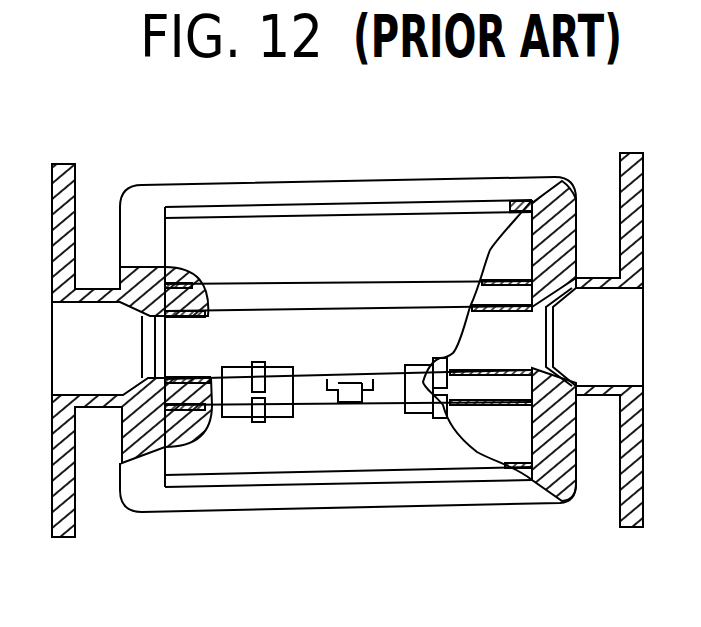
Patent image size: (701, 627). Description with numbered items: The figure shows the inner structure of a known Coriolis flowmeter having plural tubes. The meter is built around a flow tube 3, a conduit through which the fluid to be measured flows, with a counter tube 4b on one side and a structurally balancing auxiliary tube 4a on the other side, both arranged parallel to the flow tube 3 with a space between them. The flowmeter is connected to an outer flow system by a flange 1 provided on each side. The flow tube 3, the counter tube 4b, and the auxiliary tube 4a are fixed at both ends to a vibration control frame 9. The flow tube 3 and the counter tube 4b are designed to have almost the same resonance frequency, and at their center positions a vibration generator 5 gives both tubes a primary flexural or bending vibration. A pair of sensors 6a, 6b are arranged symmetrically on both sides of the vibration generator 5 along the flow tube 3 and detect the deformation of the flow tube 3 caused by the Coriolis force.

The flange 1 is at (74, 163).
The flow tube 3 is at (490, 323).
The auxiliary tube 4a is at (252, 245).
The counter tube 4b is at (492, 430).
The vibration generator 5 is at (353, 390).
The sensor 6a is at (241, 392).
The sensor 6b is at (397, 468).
The vibration control frame 9 is at (405, 190).